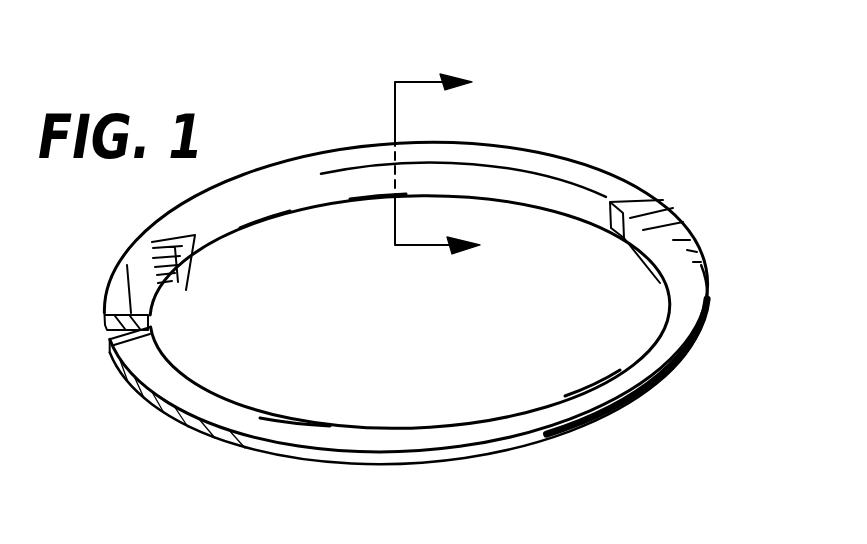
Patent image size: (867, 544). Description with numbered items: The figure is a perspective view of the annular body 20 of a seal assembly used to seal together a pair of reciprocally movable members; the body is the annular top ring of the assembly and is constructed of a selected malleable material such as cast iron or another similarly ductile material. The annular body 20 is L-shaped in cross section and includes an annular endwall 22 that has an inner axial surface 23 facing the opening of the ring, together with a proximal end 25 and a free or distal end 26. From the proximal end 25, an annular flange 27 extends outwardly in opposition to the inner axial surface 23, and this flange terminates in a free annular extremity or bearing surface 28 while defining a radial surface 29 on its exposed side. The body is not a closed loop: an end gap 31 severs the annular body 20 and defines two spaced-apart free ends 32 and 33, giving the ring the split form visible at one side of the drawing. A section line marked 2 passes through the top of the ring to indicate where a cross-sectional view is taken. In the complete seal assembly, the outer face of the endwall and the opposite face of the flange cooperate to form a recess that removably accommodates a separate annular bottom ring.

The annular body 20 is at (546, 138).
The annular endwall 22 is at (603, 210).
The inner axial surface 23 is at (263, 210).
The proximal end 25 is at (327, 173).
The distal end 26 is at (372, 196).
The annular flange 27 is at (277, 427).
The bearing surface 28 is at (670, 207).
The radial surface 29 is at (600, 383).
The end gap 31 is at (120, 372).
The free end 32 is at (118, 265).
The free end 33 is at (153, 315).
The section line 2- 2 is at (437, 146).